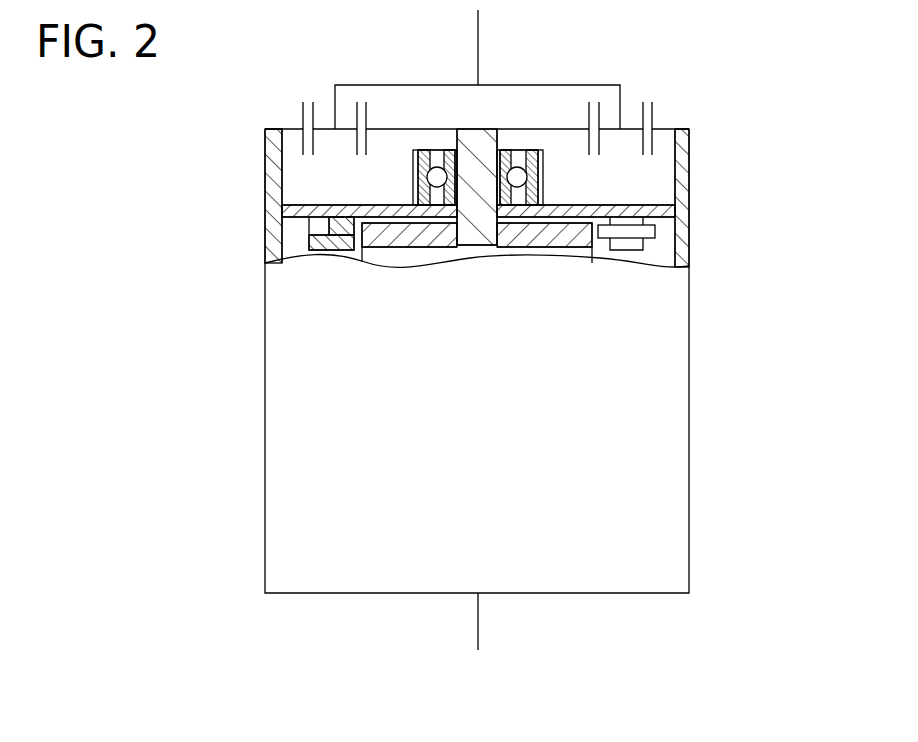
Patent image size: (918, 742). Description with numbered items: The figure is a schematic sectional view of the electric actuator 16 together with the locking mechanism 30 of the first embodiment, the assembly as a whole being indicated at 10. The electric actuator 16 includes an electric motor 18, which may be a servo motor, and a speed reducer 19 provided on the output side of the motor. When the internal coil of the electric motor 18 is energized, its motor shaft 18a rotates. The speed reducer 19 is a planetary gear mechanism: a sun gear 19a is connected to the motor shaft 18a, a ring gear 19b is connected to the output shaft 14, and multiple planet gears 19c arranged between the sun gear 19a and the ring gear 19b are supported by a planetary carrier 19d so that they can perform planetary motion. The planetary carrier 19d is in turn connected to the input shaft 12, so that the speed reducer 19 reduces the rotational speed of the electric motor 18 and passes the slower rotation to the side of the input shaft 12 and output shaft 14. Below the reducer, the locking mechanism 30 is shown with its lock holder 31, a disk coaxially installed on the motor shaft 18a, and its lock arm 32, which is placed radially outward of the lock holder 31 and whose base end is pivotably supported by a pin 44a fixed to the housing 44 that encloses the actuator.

The blower / motor device 10 is at (579, 70).
The input shaft 12 is at (478, 30).
The output shaft 14 is at (478, 622).
The electric actuator 16 is at (196, 165).
The electric motor 18 is at (358, 256).
The motor shaft 18a is at (490, 196).
The speed reducer 19 is at (263, 144).
The sun gear 19a is at (407, 129).
The ring gear 19b is at (663, 129).
The planet gears 19c is at (329, 129).
The planetary carrier 19d is at (495, 85).
The locking mechanism 30 is at (743, 268).
The lock holder 31 is at (547, 245).
The lock arm 32 is at (630, 241).
The housing 44 is at (689, 228).
The pin 44a is at (329, 233).